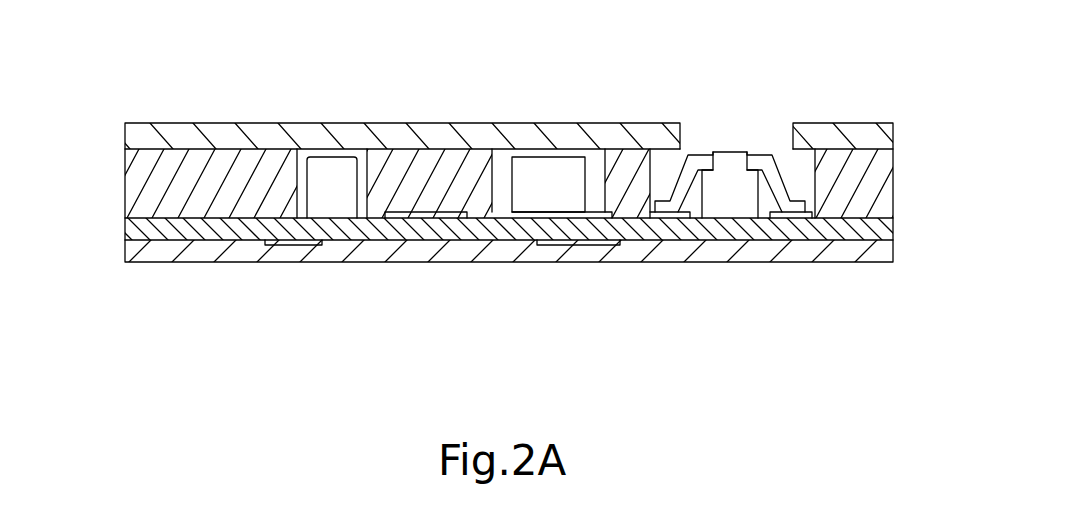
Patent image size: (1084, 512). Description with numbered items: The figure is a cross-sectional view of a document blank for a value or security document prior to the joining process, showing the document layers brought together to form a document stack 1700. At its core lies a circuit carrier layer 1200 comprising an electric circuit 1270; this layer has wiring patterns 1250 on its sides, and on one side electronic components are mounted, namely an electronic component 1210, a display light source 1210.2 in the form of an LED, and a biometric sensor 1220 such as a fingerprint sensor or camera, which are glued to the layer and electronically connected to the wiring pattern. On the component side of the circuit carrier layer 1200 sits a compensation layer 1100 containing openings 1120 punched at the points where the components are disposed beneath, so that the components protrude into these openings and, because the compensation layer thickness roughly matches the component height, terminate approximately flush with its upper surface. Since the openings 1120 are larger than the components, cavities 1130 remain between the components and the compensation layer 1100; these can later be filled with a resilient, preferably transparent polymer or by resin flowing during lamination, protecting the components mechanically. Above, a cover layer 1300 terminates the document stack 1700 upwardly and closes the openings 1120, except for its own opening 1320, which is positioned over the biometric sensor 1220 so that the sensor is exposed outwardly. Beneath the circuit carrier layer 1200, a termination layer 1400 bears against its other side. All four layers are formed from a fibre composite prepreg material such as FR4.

The document stack 1700 is at (122, 122).
The cover layer 1300 is at (897, 128).
The compensation layer 1100 is at (893, 190).
The circuit carrier layer 1200 is at (894, 226).
The termination layer 1400 is at (894, 258).
The openings 1120 is at (368, 118).
The cavities 1130 is at (345, 153).
The electronic component 1210 is at (530, 157).
The display light source 1210.2 is at (312, 155).
The biometric sensor 1220 is at (718, 207).
The wiring pattern 1250 is at (389, 217).
The opening 1320 is at (795, 113).
The electric circuit 1270 is at (718, 363).